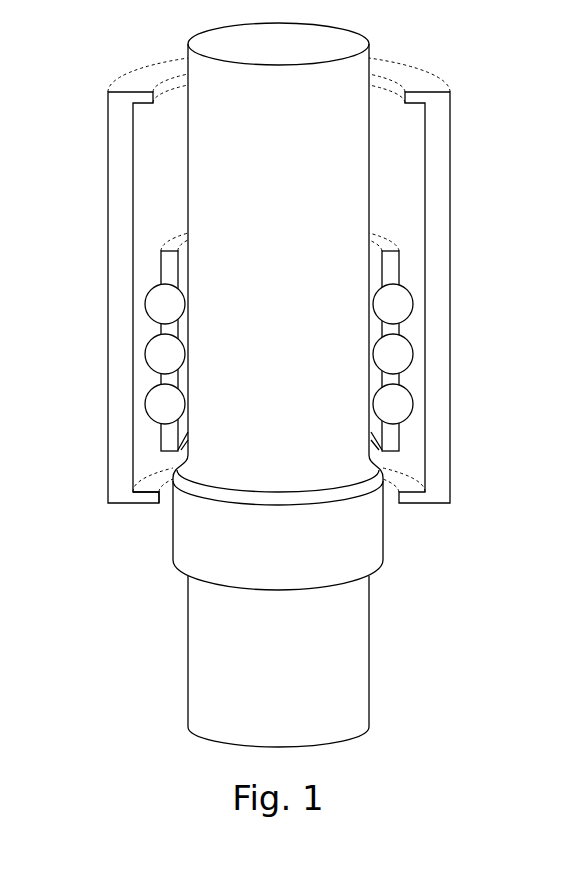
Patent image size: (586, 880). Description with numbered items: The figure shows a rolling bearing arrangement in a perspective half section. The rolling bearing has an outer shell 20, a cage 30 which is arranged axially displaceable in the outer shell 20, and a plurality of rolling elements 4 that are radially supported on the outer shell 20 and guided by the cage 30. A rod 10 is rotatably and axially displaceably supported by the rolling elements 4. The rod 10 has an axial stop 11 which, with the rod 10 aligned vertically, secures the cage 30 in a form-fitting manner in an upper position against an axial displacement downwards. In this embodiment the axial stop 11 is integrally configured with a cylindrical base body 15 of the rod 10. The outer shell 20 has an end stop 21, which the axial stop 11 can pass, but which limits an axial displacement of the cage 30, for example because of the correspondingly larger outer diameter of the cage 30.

The cylindrical base body 15 is at (263, 56).
The outer shell 20 is at (441, 143).
The rolling elements 4 is at (393, 354).
The cage 30 is at (383, 446).
The axial stop 11 is at (361, 485).
The end stop 21 is at (145, 491).
The rod 10 is at (283, 632).